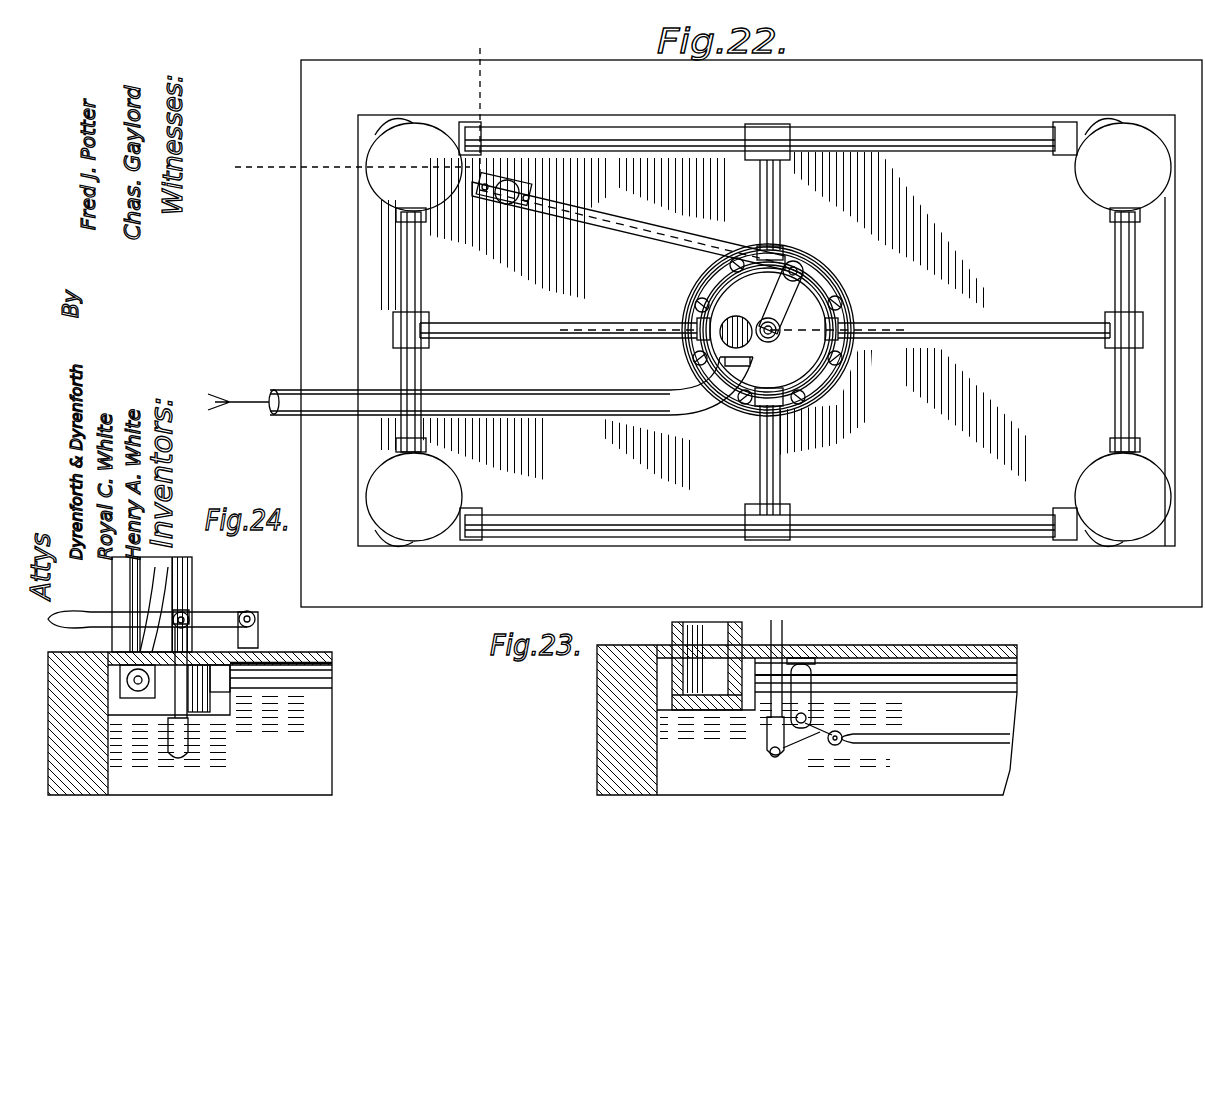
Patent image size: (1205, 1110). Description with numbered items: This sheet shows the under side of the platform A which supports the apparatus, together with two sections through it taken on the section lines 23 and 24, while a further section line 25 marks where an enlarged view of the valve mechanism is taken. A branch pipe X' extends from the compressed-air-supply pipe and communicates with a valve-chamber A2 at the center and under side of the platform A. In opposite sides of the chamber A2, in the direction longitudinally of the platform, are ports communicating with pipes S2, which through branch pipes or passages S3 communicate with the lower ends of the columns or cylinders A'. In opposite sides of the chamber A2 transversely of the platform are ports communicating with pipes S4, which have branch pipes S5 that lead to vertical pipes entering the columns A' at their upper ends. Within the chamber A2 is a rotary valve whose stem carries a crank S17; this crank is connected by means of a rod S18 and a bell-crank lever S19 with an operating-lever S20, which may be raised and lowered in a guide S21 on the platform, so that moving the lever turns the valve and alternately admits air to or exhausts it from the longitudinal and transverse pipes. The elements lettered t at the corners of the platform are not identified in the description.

In FIG. 22, the platform A is at (905, 440).
In FIG. 24, the platform A is at (204, 723).
In FIG. 23, the platform A is at (782, 720).
In FIG. 24, the columns A' is at (168, 604).
In FIG. 23, the columns A' is at (685, 664).
In FIG. 22, the valve-chamber A2 is at (830, 300).
In FIG. 22, the pocket t is at (445, 480).
In FIG. 24, the pocket t is at (203, 702).
In FIG. 23, the pocket t is at (697, 708).
In FIG. 22, the branch pipe X' is at (480, 386).
In FIG. 22, the pipes S2 is at (622, 325).
In FIG. 22, the branch pipes or passages S3 is at (422, 270).
In FIG. 22, the pipes S4 is at (780, 225).
In FIG. 22, the branch pipes S5 is at (680, 151).
In FIG. 22, the crank S17 is at (764, 308).
In FIG. 24, the crank S17 is at (185, 760).
In FIG. 22, the rod S18 is at (640, 225).
In FIG. 23, the rod S18 is at (926, 724).
In FIG. 22, the bell-crank lever S19 is at (522, 192).
In FIG. 23, the bell-crank lever S19 is at (822, 735).
In FIG. 24, the operating-lever S20 is at (210, 625).
In FIG. 24, the guide S21 is at (150, 590).
In FIG. 22, the section line 23 is at (280, 133).
In FIG. 22, the section line 24 is at (500, 48).
In FIG. 22, the section line 25 is at (870, 285).